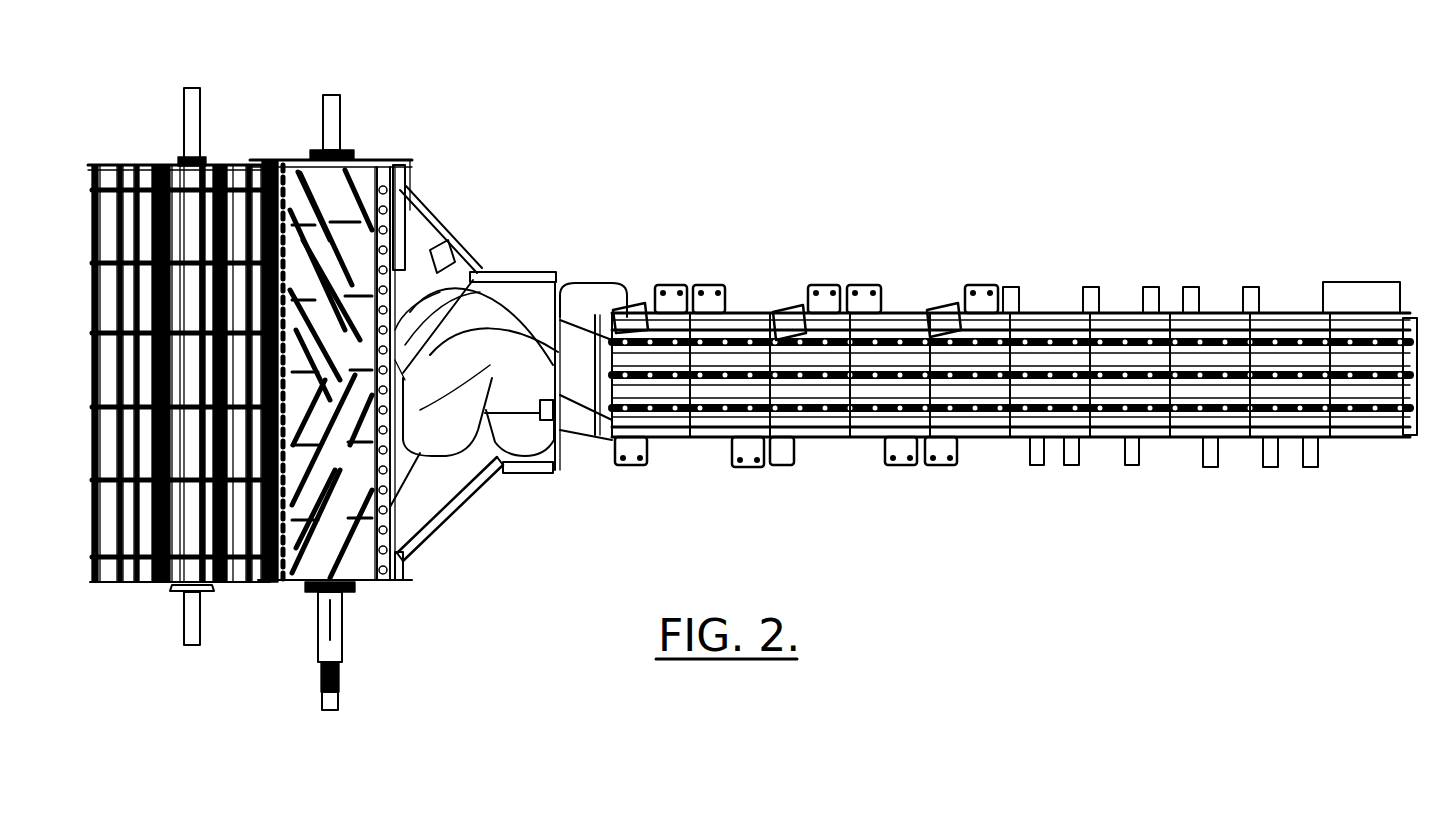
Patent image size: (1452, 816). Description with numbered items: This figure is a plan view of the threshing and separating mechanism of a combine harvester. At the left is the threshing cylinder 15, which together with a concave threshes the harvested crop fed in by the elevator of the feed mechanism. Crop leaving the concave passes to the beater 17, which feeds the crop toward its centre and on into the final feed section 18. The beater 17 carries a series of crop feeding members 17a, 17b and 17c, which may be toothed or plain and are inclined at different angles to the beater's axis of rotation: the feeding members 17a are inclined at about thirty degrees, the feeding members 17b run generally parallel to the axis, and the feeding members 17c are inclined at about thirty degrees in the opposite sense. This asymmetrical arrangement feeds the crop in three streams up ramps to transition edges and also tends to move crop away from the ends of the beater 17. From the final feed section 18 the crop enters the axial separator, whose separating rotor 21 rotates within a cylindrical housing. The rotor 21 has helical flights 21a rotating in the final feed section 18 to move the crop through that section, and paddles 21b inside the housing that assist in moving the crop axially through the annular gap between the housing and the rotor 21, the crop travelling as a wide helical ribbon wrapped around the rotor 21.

The threshing cylinder 15 is at (148, 215).
The beater 17 is at (340, 192).
The crop feeding members 17a is at (315, 185).
The crop feeding members 17b is at (313, 335).
The crop feeding members 17c is at (332, 473).
The final feed section 18 is at (448, 468).
The separating rotor 21 is at (1095, 388).
The helical flights 21a is at (495, 318).
The paddles 21b is at (780, 310).